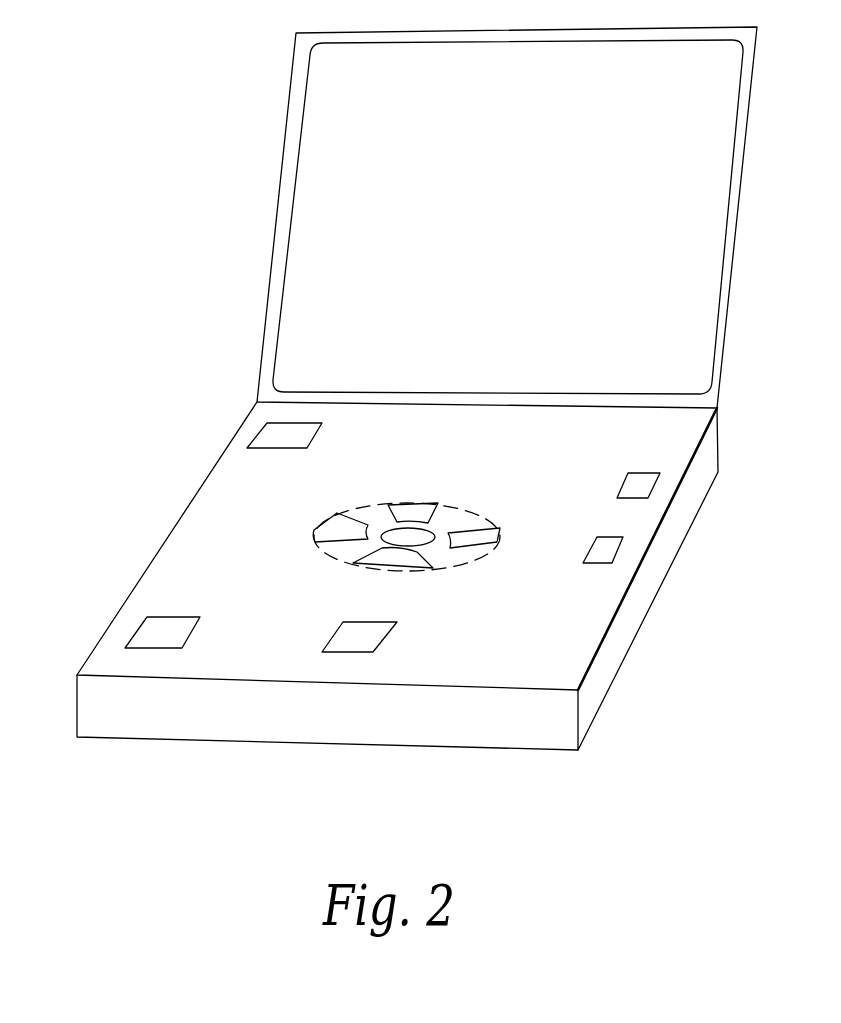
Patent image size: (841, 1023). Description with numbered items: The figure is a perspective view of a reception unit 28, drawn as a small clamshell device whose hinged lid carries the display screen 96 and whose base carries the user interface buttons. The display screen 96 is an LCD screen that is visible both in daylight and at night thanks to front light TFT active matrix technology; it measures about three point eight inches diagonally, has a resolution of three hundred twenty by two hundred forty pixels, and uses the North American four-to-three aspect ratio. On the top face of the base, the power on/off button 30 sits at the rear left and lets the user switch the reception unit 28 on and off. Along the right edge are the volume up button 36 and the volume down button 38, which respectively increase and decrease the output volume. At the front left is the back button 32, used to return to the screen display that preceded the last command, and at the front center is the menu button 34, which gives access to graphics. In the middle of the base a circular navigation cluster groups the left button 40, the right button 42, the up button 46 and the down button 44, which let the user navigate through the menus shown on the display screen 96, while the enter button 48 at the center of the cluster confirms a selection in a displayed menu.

The display screen 96 is at (377, 170).
The reception unit 28 is at (548, 732).
The power on/off button 30 is at (278, 433).
The back button 32 is at (157, 630).
The menu button 34 is at (357, 640).
The volume up button 36 is at (645, 482).
The volume down button 38 is at (618, 547).
The left button 40 is at (335, 535).
The right button 42 is at (480, 544).
The down button 44 is at (380, 565).
The up button 46 is at (415, 512).
The enter button 48 is at (408, 537).